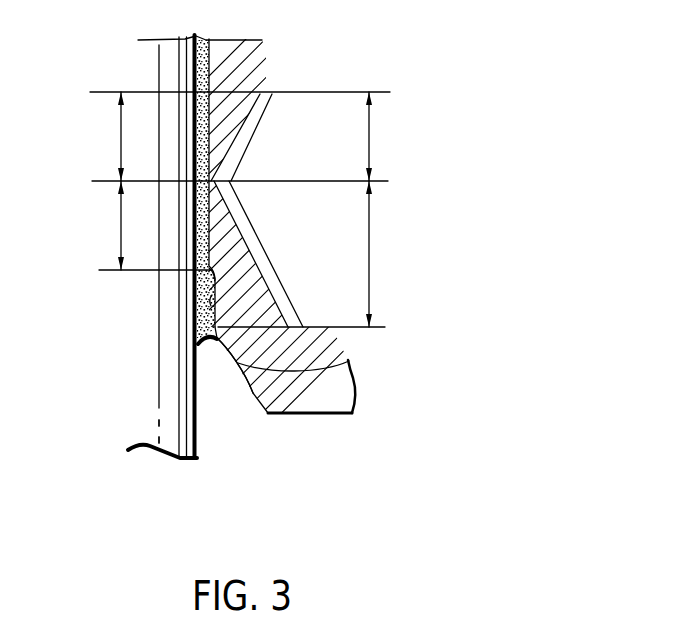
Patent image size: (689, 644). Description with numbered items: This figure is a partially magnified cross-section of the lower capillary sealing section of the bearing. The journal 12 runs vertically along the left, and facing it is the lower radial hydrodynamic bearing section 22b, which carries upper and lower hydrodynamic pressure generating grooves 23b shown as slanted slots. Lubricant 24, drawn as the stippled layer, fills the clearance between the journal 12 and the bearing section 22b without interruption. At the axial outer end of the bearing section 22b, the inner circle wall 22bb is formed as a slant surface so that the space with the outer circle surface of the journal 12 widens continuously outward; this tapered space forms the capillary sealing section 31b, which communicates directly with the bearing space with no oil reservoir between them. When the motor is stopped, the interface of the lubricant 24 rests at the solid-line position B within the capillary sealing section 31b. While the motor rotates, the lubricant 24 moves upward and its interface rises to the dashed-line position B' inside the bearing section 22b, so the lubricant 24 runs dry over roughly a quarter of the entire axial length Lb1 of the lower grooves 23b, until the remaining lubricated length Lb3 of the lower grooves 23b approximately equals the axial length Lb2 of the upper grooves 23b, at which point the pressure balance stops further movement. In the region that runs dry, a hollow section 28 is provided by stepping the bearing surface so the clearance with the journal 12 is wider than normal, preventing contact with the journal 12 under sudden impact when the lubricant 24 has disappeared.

The journal 12 is at (167, 428).
The lubricant 24 is at (205, 340).
The hydrodynamic pressure generating grooves 23b is at (237, 167).
The hollow section 28 is at (214, 306).
The lubricant interface position during rotation B' is at (160, 291).
The capillary sealing section 31b is at (245, 430).
The radial hydrodynamic bearing section 22b is at (352, 417).
The inner circle wall 22bb is at (253, 393).
The lubricant interface position when stopped B is at (334, 357).
The entire axial length of the lower hydrodynamic pressure generating grooves Lb1 is at (401, 254).
The axial length of the upper hydrodynamic pressure generating grooves Lb2 is at (242, 136).
The axial length of the lubricant left in the lower hydrodynamic pressure generating Lb3 is at (88, 225).